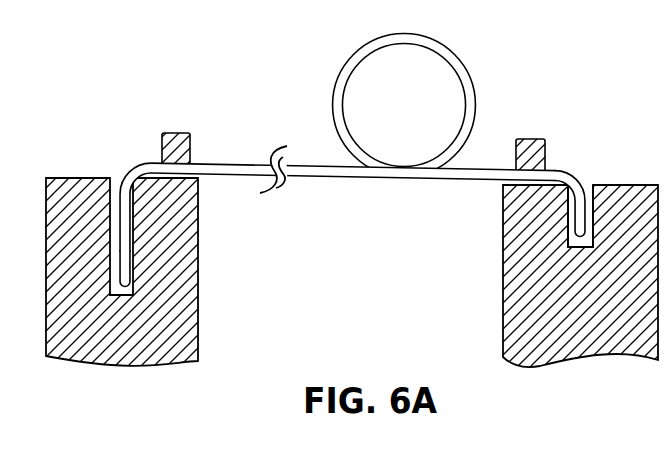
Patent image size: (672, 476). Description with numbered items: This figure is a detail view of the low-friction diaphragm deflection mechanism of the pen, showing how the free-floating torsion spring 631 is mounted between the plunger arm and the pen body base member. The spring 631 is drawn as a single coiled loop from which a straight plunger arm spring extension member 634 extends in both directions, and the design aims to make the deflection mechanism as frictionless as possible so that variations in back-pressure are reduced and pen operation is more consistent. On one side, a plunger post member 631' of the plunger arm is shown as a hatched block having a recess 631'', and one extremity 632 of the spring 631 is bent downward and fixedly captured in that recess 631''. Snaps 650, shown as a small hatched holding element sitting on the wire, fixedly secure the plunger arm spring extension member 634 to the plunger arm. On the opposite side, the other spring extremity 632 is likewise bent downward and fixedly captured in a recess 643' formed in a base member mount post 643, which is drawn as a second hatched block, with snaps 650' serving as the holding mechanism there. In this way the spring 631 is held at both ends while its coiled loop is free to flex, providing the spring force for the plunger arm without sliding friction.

The free-floating torsion spring 631 is at (417, 93).
The plunger post member 631' is at (155, 272).
The recess 631'' is at (101, 295).
The spring extremity 632 is at (121, 180).
The plunger arm spring extension member 634 is at (218, 168).
The base member mount post 643 is at (542, 276).
The recess 643' is at (578, 242).
The snaps 650 is at (161, 125).
The snaps 650' is at (557, 138).